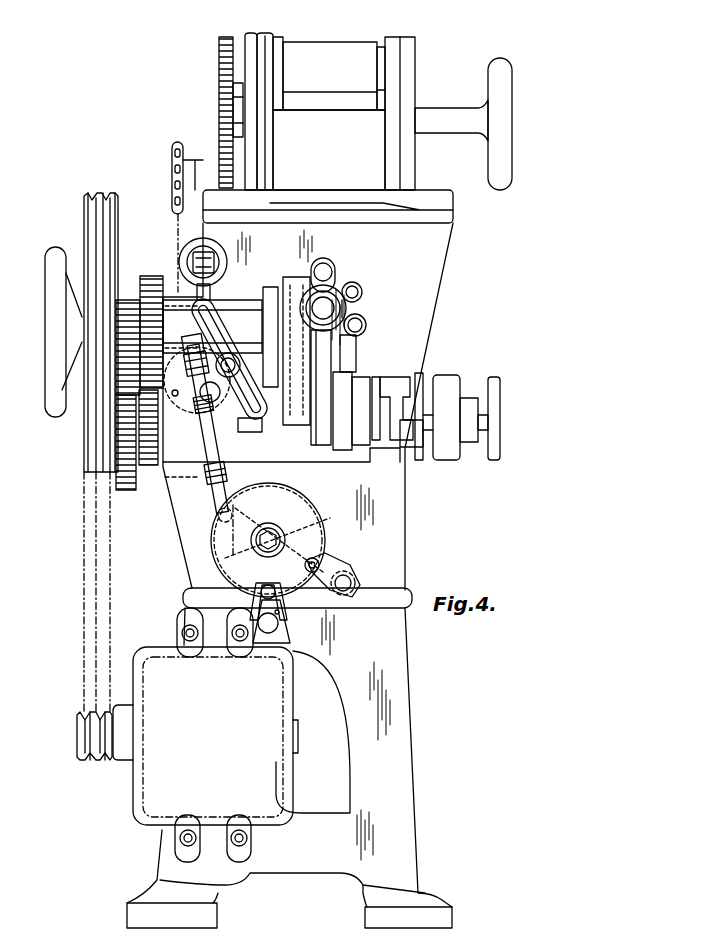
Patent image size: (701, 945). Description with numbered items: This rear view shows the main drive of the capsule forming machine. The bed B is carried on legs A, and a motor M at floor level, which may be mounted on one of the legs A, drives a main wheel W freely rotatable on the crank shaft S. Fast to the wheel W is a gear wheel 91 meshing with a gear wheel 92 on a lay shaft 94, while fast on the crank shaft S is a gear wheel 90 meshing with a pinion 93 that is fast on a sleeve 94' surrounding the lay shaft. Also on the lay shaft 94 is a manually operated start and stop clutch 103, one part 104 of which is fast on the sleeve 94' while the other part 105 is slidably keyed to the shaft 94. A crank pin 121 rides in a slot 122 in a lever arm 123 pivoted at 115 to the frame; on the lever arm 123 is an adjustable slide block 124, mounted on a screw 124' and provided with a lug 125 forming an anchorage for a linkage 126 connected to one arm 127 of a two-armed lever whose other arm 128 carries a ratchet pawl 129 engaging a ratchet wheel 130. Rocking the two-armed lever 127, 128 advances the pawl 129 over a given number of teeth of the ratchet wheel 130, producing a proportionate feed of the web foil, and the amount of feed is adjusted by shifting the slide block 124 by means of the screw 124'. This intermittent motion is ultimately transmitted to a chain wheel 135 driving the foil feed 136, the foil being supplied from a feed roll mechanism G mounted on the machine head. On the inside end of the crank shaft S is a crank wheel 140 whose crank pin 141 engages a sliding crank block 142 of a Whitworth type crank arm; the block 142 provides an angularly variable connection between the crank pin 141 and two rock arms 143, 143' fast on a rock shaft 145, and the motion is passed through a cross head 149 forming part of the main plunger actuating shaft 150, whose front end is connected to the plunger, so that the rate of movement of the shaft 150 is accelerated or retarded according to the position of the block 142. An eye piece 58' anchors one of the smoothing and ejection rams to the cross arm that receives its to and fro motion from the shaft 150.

The foil feed 136 is at (217, 103).
The chain wheel 135 is at (171, 178).
The eye piece 58' is at (214, 264).
The slot 122 is at (213, 303).
The crank wheel 140 is at (275, 292).
The crank pin 141 is at (288, 282).
The cross head 149 is at (333, 275).
The main plunger actuating shaft 150 is at (330, 308).
The rock arm 143' is at (383, 350).
The sleeve 94' is at (370, 394).
The clutch part 104 is at (386, 378).
The start and stop clutch 103 is at (420, 382).
The clutch part 105 is at (436, 392).
The lever arm 123 is at (181, 327).
The crank pin 121 is at (213, 326).
The lug 125 is at (83, 417).
The adjustable slide block 124 is at (197, 423).
The screw 124' is at (191, 426).
The pivot 115 is at (252, 432).
The linkage 126 is at (224, 467).
The sliding crank block 142 is at (310, 397).
The rock arm 143 is at (347, 418).
The rock shaft 145 is at (364, 432).
The lay shaft 94 is at (421, 452).
The ratchet wheel 130 is at (303, 494).
The lever arm 128 is at (293, 539).
The ratchet pawl 129 is at (337, 558).
The lever arm 127 is at (274, 562).
The pinion 93 is at (147, 466).
The gear wheel 92 is at (124, 491).
The gear wheel 91 is at (127, 299).
The gear wheel 90 is at (151, 275).
The main wheel W is at (113, 242).
The crank shaft S is at (113, 300).
The feed roll mechanism G is at (378, 111).
The bed B is at (397, 521).
The legs A is at (405, 697).
The motor M is at (187, 735).